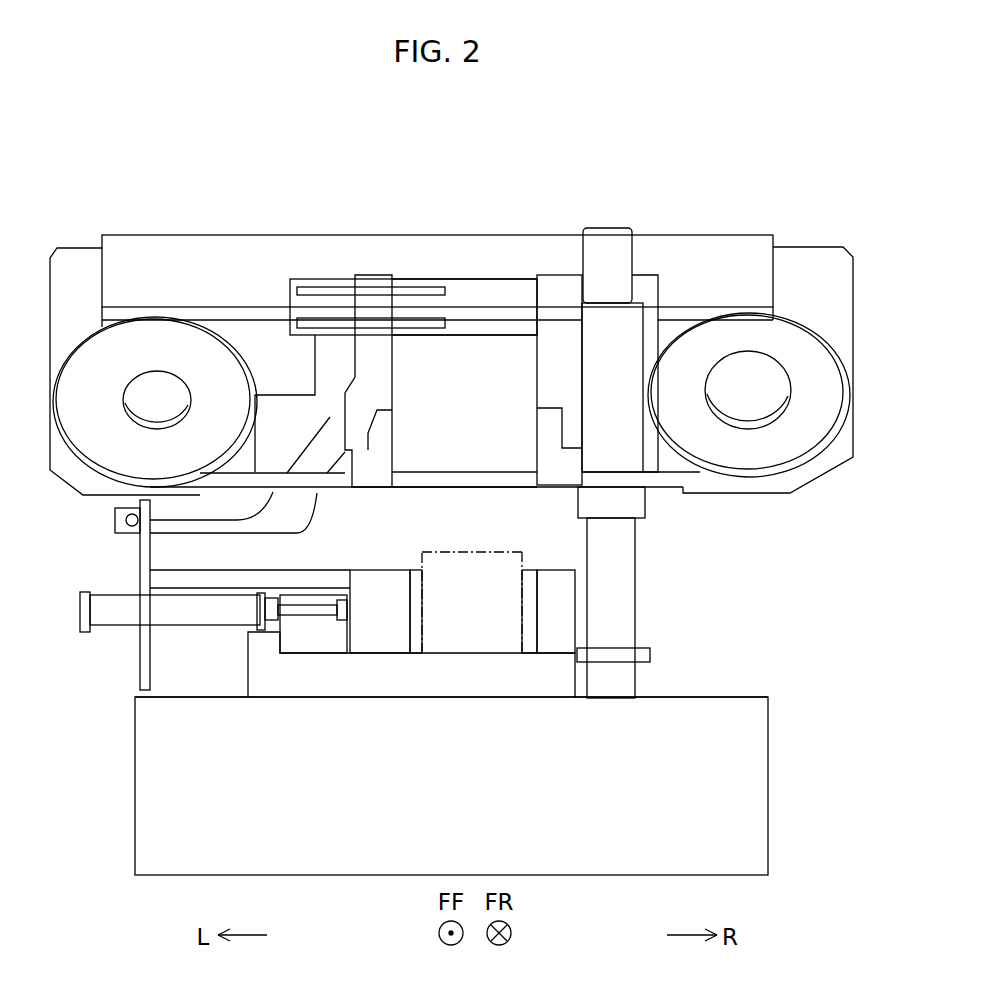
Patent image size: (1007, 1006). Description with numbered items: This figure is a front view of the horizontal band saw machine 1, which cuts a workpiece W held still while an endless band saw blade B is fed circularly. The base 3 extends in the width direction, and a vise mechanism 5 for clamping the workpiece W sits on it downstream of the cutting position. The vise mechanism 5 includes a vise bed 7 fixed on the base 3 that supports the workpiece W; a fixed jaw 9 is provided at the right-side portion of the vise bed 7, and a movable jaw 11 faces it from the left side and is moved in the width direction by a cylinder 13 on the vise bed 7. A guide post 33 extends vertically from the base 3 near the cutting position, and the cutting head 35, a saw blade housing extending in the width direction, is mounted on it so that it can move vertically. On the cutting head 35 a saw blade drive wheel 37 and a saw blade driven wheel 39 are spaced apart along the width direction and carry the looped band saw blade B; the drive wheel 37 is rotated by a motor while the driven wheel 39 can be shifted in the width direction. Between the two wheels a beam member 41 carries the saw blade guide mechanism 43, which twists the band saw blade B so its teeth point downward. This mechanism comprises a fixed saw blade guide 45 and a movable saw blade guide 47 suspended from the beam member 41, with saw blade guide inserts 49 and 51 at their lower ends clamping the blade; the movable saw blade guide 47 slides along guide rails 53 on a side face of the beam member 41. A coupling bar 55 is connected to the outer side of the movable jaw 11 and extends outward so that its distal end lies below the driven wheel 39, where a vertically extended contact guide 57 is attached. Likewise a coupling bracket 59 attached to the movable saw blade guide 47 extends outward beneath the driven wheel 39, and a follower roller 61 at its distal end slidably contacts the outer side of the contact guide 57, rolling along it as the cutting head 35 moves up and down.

The horizontal band saw machine 1 is at (403, 202).
The base 3 is at (768, 777).
The vise mechanism 5 is at (572, 568).
The vise bed 7 is at (463, 698).
The fixed jaw 9 is at (567, 610).
The movable jaw 11 is at (381, 578).
The cylinder 13 is at (105, 625).
The guide post 33 is at (607, 245).
The cutting head 35 is at (190, 236).
The saw blade drive wheel 37 is at (798, 332).
The saw blade driven wheel 39 is at (90, 362).
The beam member 41 is at (452, 278).
The saw blade guide mechanism 43 is at (496, 302).
The fixed saw blade guide 45 is at (540, 362).
The movable saw blade guide 47 is at (386, 383).
The saw blade guide insert 49 is at (540, 432).
The saw blade guide insert 51 is at (385, 444).
The guide rails 53 is at (308, 318).
The coupling bar 55 is at (318, 578).
The contact guide 57 is at (140, 568).
The coupling bracket 59 is at (335, 430).
The follower roller 61 is at (115, 522).
The workpiece W is at (450, 545).
The band saw blade B is at (465, 488).